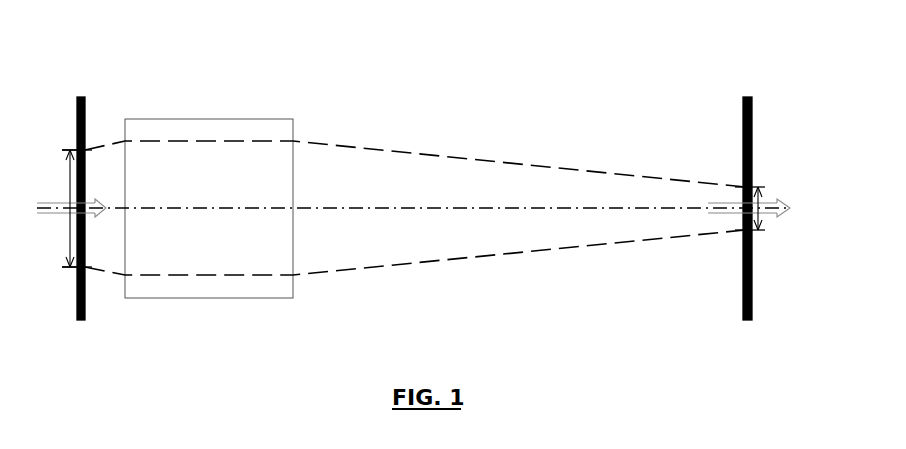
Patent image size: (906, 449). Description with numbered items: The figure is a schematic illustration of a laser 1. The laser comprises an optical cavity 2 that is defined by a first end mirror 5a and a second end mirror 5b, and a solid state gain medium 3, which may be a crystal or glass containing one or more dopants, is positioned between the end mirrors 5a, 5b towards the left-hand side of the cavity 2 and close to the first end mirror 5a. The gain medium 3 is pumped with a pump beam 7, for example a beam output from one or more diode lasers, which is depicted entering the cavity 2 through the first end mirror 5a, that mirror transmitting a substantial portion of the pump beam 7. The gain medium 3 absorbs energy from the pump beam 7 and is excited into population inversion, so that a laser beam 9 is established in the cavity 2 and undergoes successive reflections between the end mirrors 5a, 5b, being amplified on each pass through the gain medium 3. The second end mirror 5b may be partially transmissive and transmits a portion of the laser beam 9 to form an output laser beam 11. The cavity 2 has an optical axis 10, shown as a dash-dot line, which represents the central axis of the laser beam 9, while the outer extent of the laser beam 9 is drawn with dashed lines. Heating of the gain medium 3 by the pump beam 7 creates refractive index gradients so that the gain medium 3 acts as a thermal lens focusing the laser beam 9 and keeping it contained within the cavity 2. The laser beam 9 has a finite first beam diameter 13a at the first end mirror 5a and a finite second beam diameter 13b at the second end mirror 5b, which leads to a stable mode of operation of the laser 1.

The laser 1 is at (234, 42).
The optical cavity 2 is at (405, 66).
The solid state gain medium 3 is at (268, 119).
The first end mirror 5a is at (76, 125).
The second end mirror 5b is at (754, 128).
The pump beam 7 is at (50, 214).
The laser beam 9 is at (485, 161).
The optical axis 10 is at (508, 205).
The output laser beam 11 is at (766, 216).
The first beam diameter 13a is at (68, 200).
The second beam diameter 13b is at (762, 198).